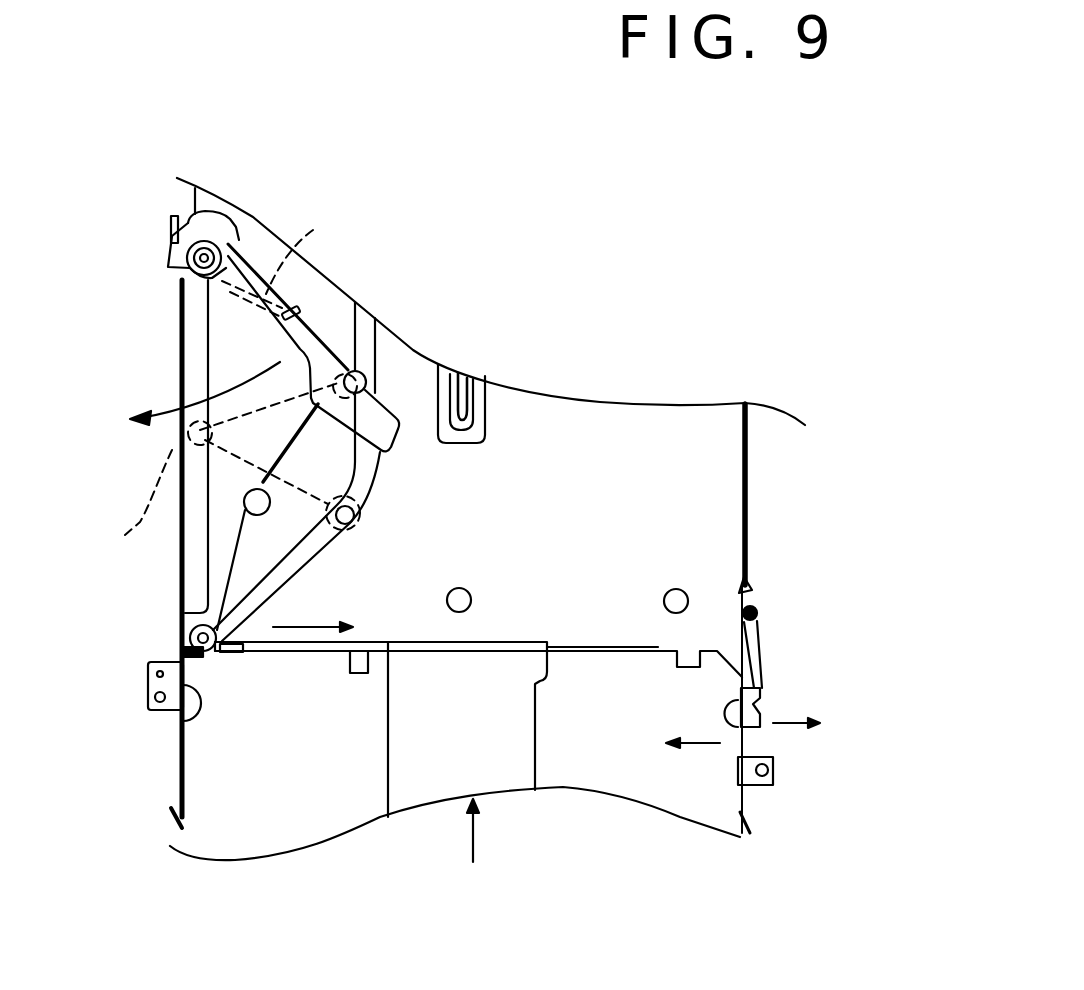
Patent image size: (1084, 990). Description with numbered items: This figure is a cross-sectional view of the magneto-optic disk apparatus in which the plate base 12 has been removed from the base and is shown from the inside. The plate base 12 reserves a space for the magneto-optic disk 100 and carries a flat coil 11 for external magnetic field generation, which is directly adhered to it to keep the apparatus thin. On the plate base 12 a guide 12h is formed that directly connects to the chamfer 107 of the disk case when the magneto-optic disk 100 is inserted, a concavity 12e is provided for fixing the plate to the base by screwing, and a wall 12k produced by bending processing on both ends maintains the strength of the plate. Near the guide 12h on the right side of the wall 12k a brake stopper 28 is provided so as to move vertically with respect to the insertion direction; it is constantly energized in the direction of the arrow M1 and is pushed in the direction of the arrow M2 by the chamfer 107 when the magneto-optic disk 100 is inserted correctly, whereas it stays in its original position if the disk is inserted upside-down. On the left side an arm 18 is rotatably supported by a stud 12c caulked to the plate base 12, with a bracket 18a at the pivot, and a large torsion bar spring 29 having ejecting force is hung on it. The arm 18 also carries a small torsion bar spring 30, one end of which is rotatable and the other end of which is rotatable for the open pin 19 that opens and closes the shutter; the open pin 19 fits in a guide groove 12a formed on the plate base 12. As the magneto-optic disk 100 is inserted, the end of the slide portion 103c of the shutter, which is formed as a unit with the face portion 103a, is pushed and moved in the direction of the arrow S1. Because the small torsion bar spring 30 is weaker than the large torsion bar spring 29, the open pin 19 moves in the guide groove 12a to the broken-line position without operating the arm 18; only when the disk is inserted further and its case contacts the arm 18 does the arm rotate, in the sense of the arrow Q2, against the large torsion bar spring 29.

The flat coil 11 is at (481, 383).
The plate base 12 is at (558, 418).
The guide groove 12a is at (378, 349).
The stud 12c is at (252, 220).
The concavity 12e is at (150, 690).
The guide 12h is at (173, 822).
The wall 12k is at (748, 522).
The arm 18 is at (316, 338).
The arm bracket 18a is at (215, 222).
The open pin 19 is at (366, 519).
The brake stopper 28 is at (755, 705).
The large torsion bar spring 29 is at (314, 232).
The small torsion bar spring 30 is at (234, 556).
The magneto-optic disk 100 is at (628, 778).
The face portion 103a is at (388, 738).
The slide portion 103c is at (222, 652).
The chamfer 107 is at (728, 660).
The rotation direction Q2 is at (155, 412).
The arrow S1 is at (326, 621).
The arrow M1 is at (718, 745).
The arrow M2 is at (783, 730).